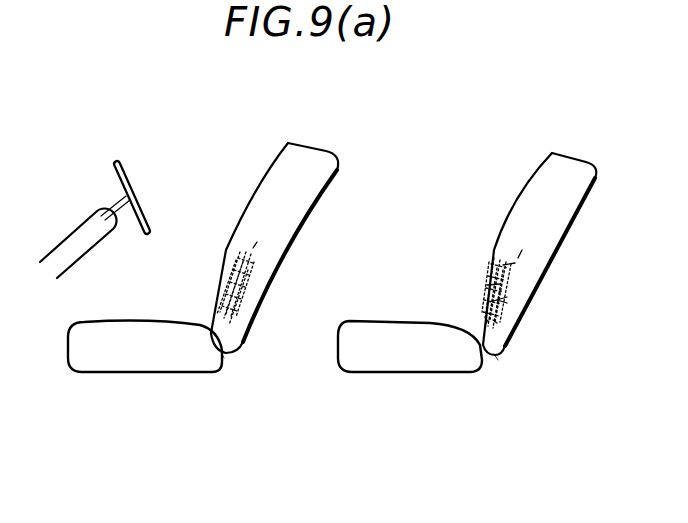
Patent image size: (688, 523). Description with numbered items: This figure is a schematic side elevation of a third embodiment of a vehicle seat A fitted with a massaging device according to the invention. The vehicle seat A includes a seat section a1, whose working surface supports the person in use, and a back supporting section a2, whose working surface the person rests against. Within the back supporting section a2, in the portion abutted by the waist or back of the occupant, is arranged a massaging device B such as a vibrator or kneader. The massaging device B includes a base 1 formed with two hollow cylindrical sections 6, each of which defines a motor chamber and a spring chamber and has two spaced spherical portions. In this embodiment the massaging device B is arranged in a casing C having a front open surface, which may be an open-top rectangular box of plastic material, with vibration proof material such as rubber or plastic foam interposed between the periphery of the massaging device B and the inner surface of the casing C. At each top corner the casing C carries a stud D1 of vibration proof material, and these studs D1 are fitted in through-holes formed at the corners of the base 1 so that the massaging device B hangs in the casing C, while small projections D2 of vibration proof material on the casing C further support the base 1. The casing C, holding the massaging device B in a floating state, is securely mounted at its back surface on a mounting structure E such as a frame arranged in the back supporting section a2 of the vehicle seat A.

The seat section a1 is at (90, 363).
The back supporting section a2 is at (285, 165).
The vehicle seat A is at (225, 368).
The massaging device B is at (232, 288).
The casing C is at (507, 303).
The mounting structure E is at (253, 248).
The base 1 is at (487, 285).
The hollow cylindrical section 6 is at (497, 323).
The stud D1 is at (490, 302).
The small projection D2 is at (503, 265).